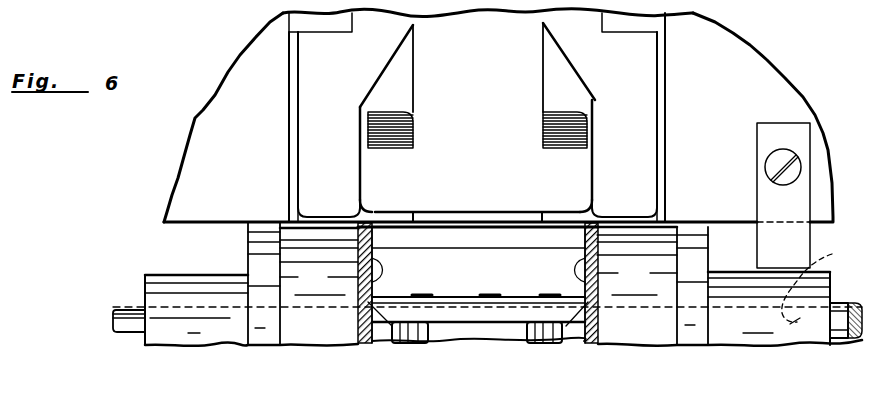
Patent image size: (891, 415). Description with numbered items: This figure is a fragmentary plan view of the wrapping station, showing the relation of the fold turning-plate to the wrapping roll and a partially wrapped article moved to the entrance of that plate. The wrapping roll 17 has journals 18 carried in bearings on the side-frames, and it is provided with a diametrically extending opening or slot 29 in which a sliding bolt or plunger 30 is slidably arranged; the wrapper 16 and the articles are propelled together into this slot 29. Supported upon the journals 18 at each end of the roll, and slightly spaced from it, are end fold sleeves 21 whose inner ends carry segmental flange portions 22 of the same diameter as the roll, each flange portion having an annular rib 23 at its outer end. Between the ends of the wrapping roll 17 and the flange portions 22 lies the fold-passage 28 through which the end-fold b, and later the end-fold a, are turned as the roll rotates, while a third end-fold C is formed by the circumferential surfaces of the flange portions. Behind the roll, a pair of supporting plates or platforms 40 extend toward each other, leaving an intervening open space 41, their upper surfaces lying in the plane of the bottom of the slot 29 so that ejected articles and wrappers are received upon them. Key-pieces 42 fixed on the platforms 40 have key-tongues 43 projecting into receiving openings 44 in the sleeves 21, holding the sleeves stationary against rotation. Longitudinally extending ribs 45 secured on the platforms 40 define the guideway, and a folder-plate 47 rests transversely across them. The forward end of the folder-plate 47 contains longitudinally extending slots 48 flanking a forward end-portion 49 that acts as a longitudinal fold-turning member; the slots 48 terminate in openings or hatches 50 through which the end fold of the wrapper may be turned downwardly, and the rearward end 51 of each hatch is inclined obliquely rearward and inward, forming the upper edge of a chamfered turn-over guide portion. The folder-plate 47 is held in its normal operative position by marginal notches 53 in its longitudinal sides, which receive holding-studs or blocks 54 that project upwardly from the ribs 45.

The wrapper 16 is at (478, 283).
The wrapping roll 17 is at (374, 324).
The journals 18 is at (125, 308).
The end fold sleeves 21 is at (203, 266).
The segmental flange portions 22 is at (336, 334).
The annular rib 23 is at (250, 242).
The fold-passage 28 is at (357, 266).
The opening or slot 29 is at (488, 333).
The sliding bolt or plunger 30 is at (478, 308).
The supporting plates or platforms 40 is at (565, 215).
The open space 41 is at (441, 219).
The key-pieces 42 is at (792, 197).
The key-tongues 43 is at (803, 329).
The receiving openings 44 is at (820, 283).
The longitudinally extending ribs 45 is at (290, 113).
The folder-plate 47 is at (477, 124).
The longitudinally extending slots 48 is at (359, 167).
The forward end-portion 49 is at (504, 212).
The openings or hatches 50 is at (477, 114).
The rearward end 51 is at (404, 58).
The marginal notches 53 is at (316, 27).
The holding-studs or blocks 54 is at (262, 3).
The end-fold a is at (377, 280).
The end-fold b is at (375, 248).
The end-fold C is at (322, 205).